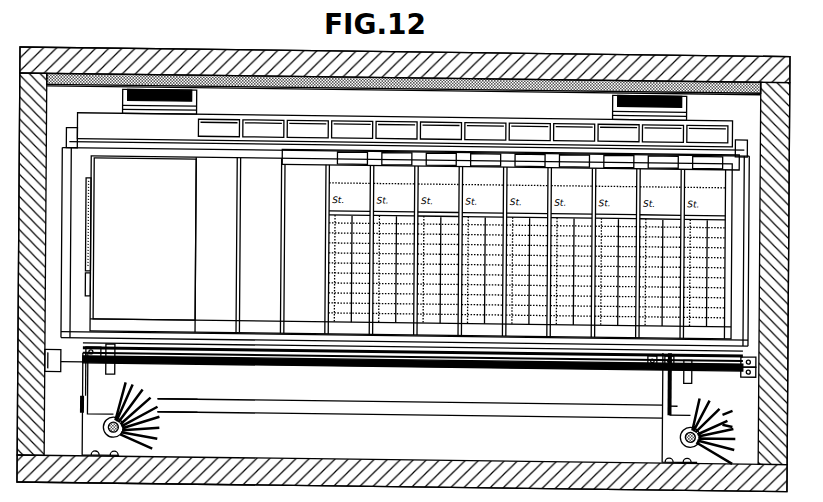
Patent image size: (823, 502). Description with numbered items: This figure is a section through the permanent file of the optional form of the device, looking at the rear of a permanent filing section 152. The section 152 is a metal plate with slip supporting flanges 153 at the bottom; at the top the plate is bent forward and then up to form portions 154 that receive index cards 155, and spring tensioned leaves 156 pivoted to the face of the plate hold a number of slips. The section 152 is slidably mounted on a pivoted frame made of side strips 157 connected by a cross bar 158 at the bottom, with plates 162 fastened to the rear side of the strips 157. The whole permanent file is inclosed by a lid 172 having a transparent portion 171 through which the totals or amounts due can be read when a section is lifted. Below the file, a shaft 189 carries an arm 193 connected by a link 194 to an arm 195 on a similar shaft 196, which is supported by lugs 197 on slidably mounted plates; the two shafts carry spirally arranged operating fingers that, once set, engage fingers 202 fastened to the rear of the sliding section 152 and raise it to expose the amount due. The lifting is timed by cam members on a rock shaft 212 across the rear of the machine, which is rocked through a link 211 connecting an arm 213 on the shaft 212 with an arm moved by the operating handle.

The lid 172 is at (438, 88).
The transparent portion 171 is at (222, 81).
The bent top portions 154 is at (109, 116).
The index cards 155 is at (238, 119).
The plates 162 is at (745, 156).
The permanent filing section 152 is at (80, 315).
The spring tensioned leaves 156 is at (188, 311).
The slip supporting flanges 153 is at (370, 322).
The cross bar 158 is at (457, 341).
The rock shaft 212 is at (543, 348).
The link 194 is at (413, 400).
The arm 195 is at (162, 413).
The lugs 197 is at (90, 425).
The shaft 196 is at (105, 430).
The shaft 189 is at (683, 431).
The fingers 202 is at (688, 369).
The link 211 is at (745, 349).
The strips 157 is at (752, 364).
The arm 213 is at (716, 407).
The arm 193 is at (716, 417).